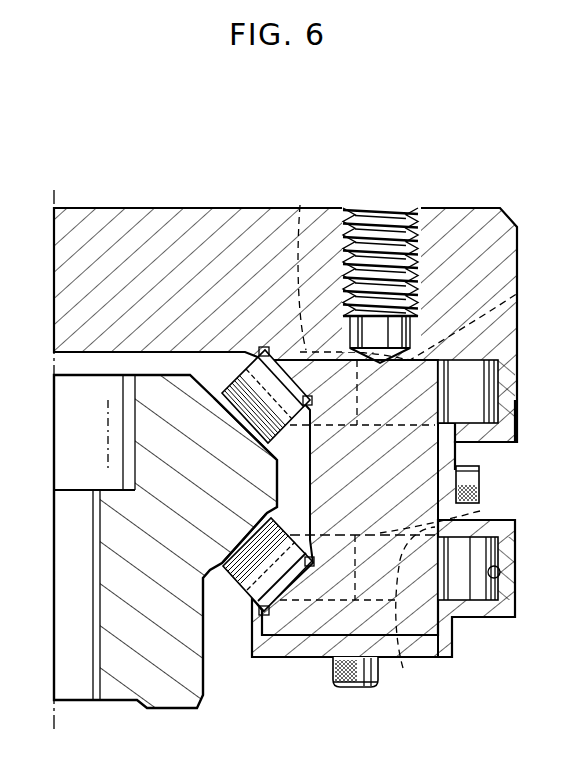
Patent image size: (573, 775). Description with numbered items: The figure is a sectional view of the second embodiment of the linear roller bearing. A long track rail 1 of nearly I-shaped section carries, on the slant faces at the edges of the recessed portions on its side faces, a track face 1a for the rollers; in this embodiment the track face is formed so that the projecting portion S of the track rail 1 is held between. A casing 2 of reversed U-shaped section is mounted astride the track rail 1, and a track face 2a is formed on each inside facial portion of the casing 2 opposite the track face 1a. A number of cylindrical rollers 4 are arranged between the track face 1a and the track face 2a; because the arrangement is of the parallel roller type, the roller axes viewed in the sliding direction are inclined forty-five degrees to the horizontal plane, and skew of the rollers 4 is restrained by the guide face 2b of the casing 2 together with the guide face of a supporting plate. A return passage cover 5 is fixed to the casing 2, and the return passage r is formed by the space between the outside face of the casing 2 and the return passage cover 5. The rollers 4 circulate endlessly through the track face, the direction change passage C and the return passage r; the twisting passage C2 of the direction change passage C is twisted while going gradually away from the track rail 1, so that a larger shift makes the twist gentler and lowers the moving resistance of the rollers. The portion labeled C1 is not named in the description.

The track rail 1 is at (205, 701).
The track face 1a is at (277, 461).
The casing 2 is at (242, 203).
The track face 2a is at (272, 616).
The guide face 2b is at (250, 350).
The cylindrical roller 4 is at (260, 348).
The return passage cover 5 is at (504, 432).
The projecting portion S is at (280, 460).
The direction change passage C is at (411, 489).
The passage C1 is at (235, 412).
The twisting passage C2 is at (398, 356).
The return passage r is at (500, 570).